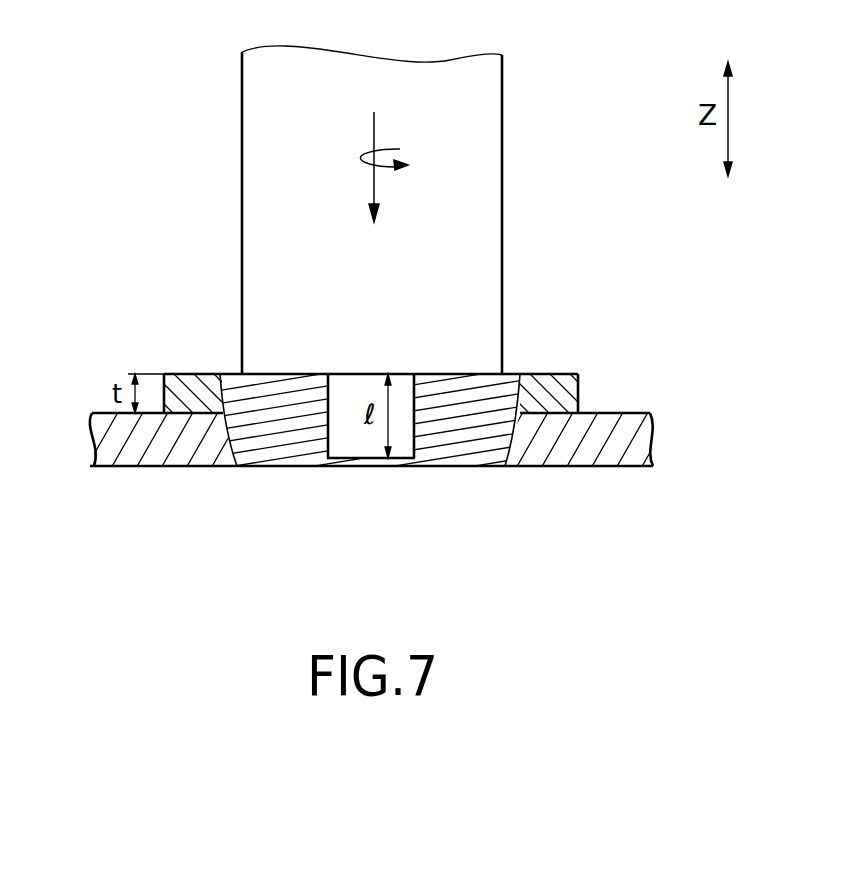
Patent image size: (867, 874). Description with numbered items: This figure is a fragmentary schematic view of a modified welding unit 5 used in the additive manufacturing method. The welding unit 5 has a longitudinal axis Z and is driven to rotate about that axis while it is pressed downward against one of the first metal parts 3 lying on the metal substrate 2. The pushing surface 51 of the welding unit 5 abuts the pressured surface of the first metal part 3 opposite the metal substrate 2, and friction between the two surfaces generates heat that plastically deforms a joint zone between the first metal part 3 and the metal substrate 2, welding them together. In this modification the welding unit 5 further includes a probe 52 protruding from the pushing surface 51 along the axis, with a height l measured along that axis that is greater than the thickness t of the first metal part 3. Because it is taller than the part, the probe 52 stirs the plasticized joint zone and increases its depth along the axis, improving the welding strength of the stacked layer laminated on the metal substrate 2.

The metal substrate 2 is at (630, 411).
The first metal part 3 is at (544, 367).
The welding unit 5 is at (503, 202).
The pushing surface 51 is at (258, 377).
The probe 52 is at (343, 433).